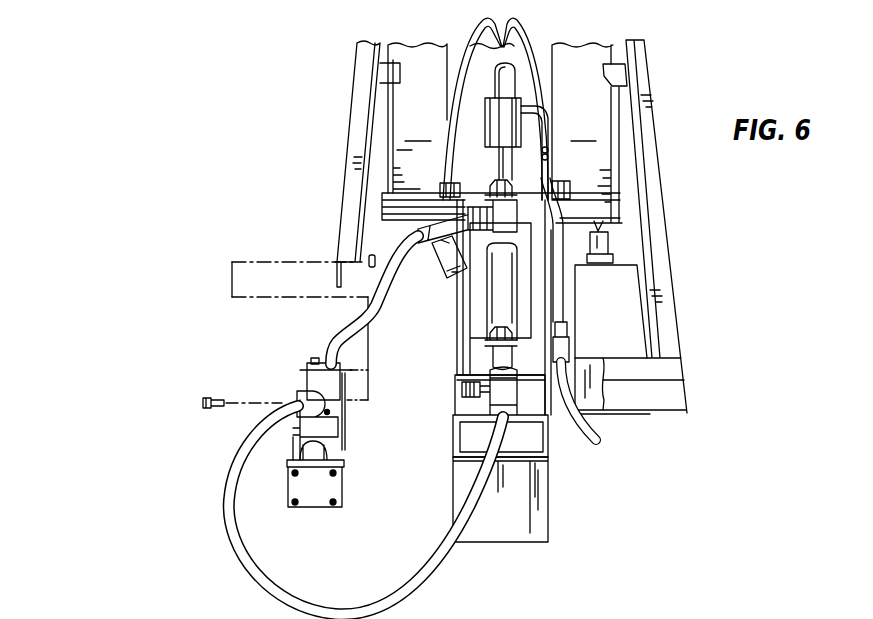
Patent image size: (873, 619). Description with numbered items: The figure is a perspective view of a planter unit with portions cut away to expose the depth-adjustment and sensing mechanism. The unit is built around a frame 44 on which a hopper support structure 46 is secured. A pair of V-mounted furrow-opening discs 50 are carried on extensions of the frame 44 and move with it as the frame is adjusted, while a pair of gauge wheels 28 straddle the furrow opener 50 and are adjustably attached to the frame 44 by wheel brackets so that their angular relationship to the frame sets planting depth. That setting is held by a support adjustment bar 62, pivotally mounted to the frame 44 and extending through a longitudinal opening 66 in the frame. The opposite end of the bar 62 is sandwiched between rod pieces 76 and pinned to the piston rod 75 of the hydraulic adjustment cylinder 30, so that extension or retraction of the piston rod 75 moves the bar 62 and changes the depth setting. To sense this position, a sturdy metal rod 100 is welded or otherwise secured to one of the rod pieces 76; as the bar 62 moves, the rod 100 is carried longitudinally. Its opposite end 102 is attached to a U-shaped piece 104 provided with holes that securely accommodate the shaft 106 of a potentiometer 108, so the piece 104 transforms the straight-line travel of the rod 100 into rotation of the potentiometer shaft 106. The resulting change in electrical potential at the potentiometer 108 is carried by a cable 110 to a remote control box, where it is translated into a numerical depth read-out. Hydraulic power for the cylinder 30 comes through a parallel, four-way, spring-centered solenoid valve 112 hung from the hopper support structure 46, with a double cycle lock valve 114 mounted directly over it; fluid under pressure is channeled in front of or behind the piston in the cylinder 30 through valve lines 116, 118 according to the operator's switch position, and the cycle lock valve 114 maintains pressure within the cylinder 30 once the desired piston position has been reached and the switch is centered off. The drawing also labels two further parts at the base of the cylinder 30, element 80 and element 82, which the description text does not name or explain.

The gauge wheels 28 is at (505, 133).
The hydraulic adjustment cylinder 30 is at (514, 291).
The frame 44 is at (487, 170).
The hopper support structure 46 is at (368, 130).
The furrow-opening discs 50 is at (476, 28).
The support adjustment bar 62 is at (503, 100).
The longitudinal opening 66 is at (499, 71).
The piston rod 75 is at (549, 157).
The rod pieces 76 is at (522, 110).
The base block 80 is at (458, 415).
The housing block 82 is at (530, 532).
The metal rod 100 is at (559, 214).
The opposite end 102 is at (566, 306).
The U-shaped piece 104 is at (571, 349).
The potentiometer shaft 106 is at (540, 393).
The potentiometer 108 is at (628, 334).
The cable 110 is at (612, 241).
The 4-way valve 112 is at (330, 457).
The double cycle lock valve 114 is at (331, 428).
The valve line 116 is at (392, 280).
The valve line 118 is at (343, 598).